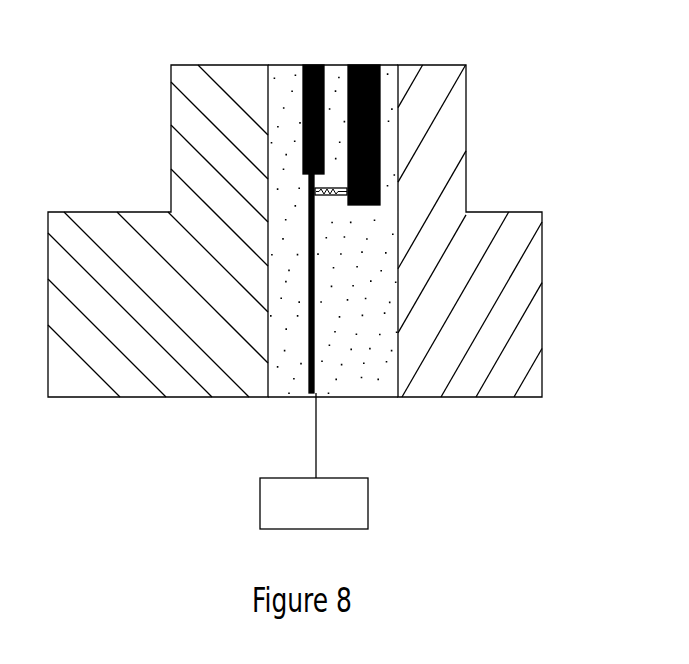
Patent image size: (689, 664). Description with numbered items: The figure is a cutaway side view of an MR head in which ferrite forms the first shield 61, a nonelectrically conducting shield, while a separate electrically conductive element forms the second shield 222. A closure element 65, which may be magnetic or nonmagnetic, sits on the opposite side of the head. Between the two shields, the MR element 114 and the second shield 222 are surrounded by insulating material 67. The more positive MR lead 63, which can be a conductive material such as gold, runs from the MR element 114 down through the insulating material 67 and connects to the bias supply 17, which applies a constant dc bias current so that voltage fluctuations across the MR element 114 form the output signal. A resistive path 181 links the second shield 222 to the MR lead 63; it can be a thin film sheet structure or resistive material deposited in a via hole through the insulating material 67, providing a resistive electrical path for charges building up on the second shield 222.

The bias supply 17 is at (363, 498).
The first shield 61 is at (107, 223).
The MR lead 63 is at (310, 382).
The closure element 65 is at (513, 226).
The insulating material 67 is at (287, 82).
The MR element 114 is at (313, 65).
The resistive path 181 is at (328, 198).
The second shield 222 is at (372, 65).